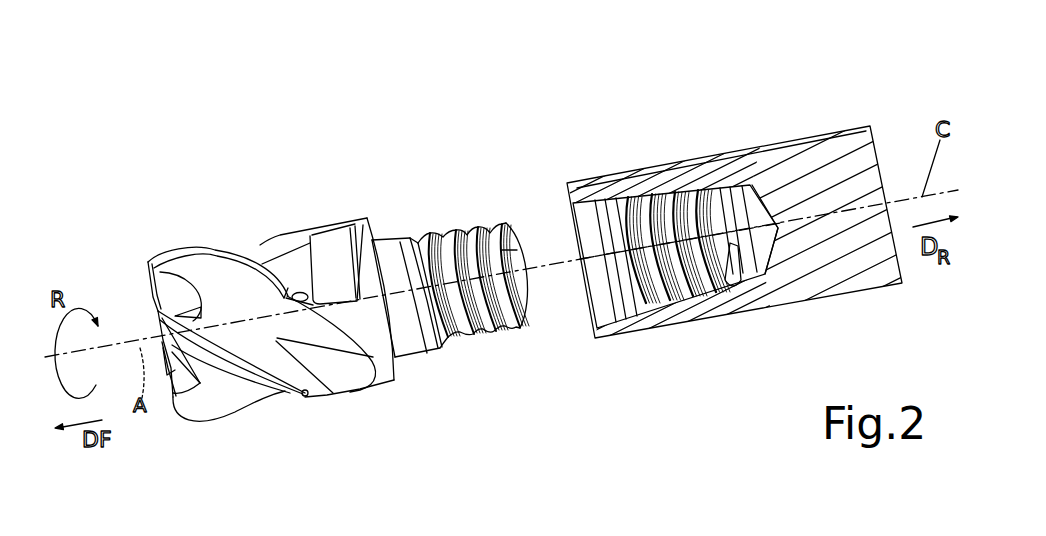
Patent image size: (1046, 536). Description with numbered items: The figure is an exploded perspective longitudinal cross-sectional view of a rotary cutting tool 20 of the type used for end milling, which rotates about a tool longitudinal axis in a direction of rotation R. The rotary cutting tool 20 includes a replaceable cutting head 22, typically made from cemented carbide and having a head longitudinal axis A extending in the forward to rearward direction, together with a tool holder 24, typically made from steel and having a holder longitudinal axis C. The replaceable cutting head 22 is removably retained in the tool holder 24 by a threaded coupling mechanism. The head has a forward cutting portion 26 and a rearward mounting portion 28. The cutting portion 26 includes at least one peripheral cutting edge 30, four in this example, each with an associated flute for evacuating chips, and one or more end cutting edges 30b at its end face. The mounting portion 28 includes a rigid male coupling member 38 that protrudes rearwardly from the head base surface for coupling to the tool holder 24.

The rotary cutting tool 20 is at (175, 185).
The replaceable cutting head 22 is at (333, 173).
The tool holder 24 is at (747, 112).
The cutting portion 26 is at (270, 420).
The mounting portion 28 is at (448, 193).
The peripheral cutting edge 30 is at (220, 252).
The end cutting edge 30b is at (148, 263).
The male coupling member 38 is at (479, 363).